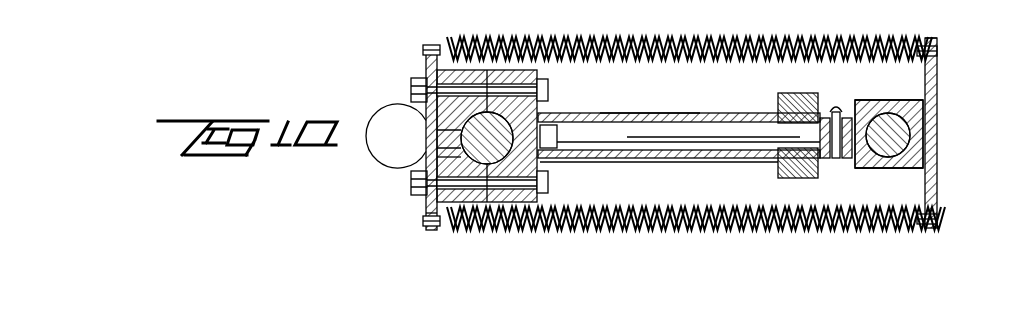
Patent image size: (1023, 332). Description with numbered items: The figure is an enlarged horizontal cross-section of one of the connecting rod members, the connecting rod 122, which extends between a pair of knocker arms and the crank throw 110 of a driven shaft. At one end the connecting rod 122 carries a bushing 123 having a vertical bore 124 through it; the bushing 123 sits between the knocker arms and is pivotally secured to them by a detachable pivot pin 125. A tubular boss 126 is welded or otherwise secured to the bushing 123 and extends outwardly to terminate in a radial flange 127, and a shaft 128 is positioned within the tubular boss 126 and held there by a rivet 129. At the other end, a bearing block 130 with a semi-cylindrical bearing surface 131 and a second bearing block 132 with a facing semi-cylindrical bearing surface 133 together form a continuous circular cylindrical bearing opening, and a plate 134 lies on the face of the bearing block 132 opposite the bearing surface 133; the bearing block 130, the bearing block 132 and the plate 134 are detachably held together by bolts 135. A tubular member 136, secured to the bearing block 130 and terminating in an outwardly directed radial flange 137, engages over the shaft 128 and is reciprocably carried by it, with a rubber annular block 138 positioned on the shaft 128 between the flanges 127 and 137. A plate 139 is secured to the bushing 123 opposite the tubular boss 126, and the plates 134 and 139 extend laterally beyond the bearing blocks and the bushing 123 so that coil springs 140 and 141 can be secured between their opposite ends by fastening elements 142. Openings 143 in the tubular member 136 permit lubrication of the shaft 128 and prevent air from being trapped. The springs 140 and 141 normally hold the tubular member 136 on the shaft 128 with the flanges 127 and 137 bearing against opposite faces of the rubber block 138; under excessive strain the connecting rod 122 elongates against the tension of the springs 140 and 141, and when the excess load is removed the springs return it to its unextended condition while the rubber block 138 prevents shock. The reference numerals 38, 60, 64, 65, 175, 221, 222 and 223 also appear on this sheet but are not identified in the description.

The spring 38 is at (796, 10).
The member 60 is at (531, 5).
The member 64 is at (479, 11).
The member 65 is at (611, 5).
The crank throw 110 is at (427, 130).
The connecting rod 122 is at (947, 82).
The bushing 123 is at (937, 113).
The vertical bore 124 is at (935, 148).
The detachable pivot pin 125 is at (910, 136).
The tubular boss 126 is at (851, 104).
The radial flange 127 is at (838, 105).
The shaft 128 is at (727, 138).
The rivet 129 is at (838, 165).
The bearing block 130 is at (583, 38).
The semi-cylindrical bearing surface 131 is at (549, 96).
The second bearing block 132 is at (428, 75).
The semi-cylindrical bearing surface 133 is at (427, 157).
The plate 134 is at (425, 213).
The bolts 135 is at (549, 85).
The tubular member 136 is at (630, 111).
The radial flange 137 is at (776, 112).
The rubber annular block 138 is at (800, 84).
The plate 139 is at (940, 63).
The coil spring 140 is at (700, 28).
The coil spring 141 is at (652, 213).
The fastening elements 142 is at (440, 46).
The openings 143 is at (607, 111).
The member 175 is at (122, 19).
The member 221 is at (212, 22).
The member 222 is at (257, 0).
The member 223 is at (265, 42).